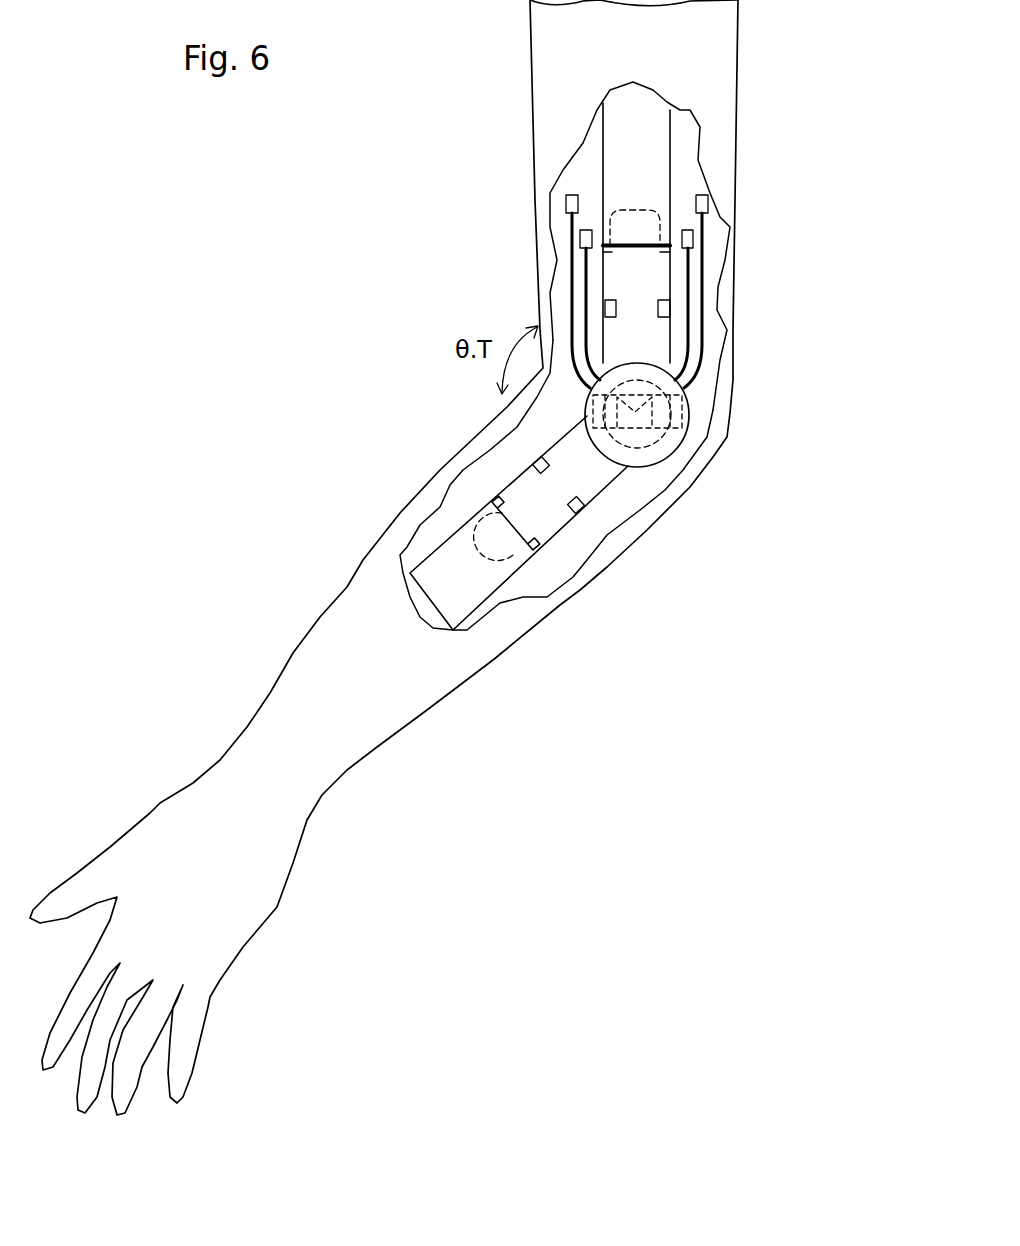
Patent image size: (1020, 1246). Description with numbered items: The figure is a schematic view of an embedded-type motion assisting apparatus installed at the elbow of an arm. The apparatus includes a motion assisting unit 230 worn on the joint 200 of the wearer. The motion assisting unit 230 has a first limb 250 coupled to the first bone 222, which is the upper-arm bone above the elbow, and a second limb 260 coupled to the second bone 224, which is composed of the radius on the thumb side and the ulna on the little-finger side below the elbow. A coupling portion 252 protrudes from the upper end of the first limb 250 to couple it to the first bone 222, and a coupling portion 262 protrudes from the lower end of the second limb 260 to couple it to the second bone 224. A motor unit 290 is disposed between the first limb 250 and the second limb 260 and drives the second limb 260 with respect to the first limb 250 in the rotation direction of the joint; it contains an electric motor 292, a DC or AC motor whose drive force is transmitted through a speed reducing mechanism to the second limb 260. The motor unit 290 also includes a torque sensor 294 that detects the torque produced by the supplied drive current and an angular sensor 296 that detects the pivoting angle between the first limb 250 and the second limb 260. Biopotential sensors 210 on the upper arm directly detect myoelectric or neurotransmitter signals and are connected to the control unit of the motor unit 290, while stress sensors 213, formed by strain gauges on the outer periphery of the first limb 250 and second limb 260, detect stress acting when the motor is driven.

The joint 200 is at (697, 412).
The biopotential sensors 210 is at (580, 235).
The stress sensors 213 is at (612, 301).
The first bone 222 is at (628, 127).
The second bone 224 is at (453, 567).
The motion assisting unit 230 is at (573, 409).
The first limb 250 is at (627, 272).
The coupling portion 252 is at (638, 220).
The second limb 260 is at (520, 503).
The coupling portion 262 is at (510, 543).
The motor unit 290 is at (663, 442).
The electric motor 292 is at (640, 447).
The torque sensor 294 is at (592, 427).
The angular sensor 296 is at (662, 433).